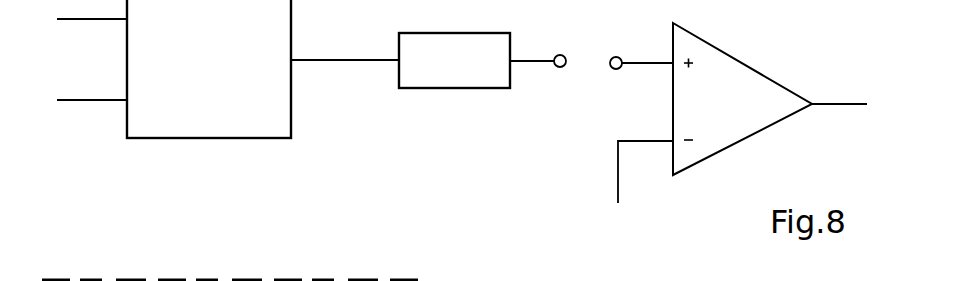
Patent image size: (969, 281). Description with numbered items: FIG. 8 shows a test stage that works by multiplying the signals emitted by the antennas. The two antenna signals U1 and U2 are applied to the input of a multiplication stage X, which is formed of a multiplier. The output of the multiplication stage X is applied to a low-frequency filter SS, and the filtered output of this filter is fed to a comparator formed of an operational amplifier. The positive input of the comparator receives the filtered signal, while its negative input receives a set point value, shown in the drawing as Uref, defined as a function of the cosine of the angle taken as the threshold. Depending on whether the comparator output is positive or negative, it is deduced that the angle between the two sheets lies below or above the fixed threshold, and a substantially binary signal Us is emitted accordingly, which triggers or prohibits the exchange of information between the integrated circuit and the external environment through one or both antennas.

The multiplication stage X is at (209, 69).
The antenna signal U1 is at (73, 19).
The antenna signal U2 is at (73, 100).
The low-frequency filter SS is at (454, 60).
The binary signal Us is at (840, 90).
The reference voltage Uref is at (635, 188).